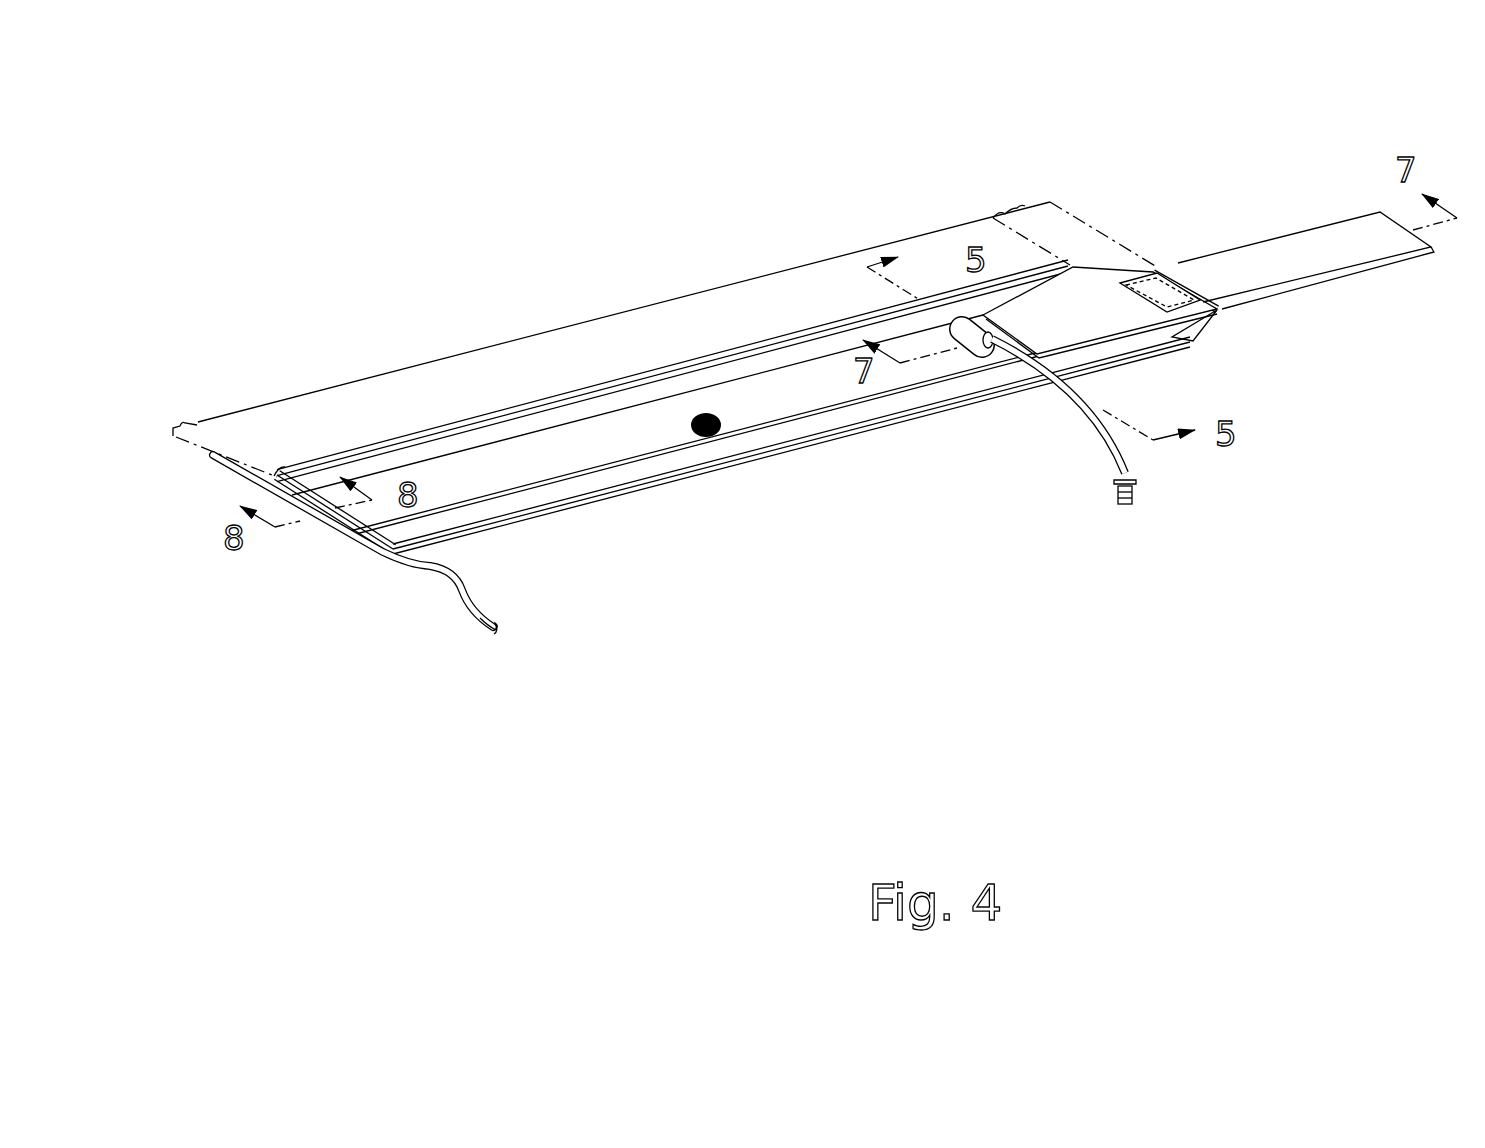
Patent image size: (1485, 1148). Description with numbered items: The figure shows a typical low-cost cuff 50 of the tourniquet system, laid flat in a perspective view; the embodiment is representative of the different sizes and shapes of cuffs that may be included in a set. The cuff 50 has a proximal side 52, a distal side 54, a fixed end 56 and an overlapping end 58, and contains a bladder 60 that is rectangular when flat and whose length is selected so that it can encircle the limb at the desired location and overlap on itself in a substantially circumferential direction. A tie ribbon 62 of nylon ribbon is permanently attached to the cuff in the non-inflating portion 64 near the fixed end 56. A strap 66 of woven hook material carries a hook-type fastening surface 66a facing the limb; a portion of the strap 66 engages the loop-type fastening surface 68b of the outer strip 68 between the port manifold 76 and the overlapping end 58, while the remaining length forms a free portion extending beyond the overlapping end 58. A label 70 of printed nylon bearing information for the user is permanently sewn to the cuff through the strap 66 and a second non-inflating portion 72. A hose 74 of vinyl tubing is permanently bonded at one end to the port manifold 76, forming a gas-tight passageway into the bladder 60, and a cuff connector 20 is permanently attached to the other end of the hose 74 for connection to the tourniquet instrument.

The cuff connector 20 is at (1116, 500).
The cuff 50 is at (453, 300).
The proximal side 52 is at (599, 511).
The distal side 54 is at (507, 403).
The fixed end 56 is at (345, 581).
The overlapping end 58 is at (1243, 333).
The bladder 60 is at (665, 302).
The tie ribbon 62 is at (465, 597).
The non-inflating portion 64 is at (216, 424).
The strap 66 is at (1270, 240).
The hook-type fastening surface 66a is at (1331, 284).
The outer strip 68 is at (683, 382).
The loop-type fastening surface 68b is at (702, 436).
The label 70 is at (1173, 278).
The non-inflating portion 72 is at (1075, 211).
The hose 74 is at (1062, 395).
The port manifold 76 is at (972, 342).